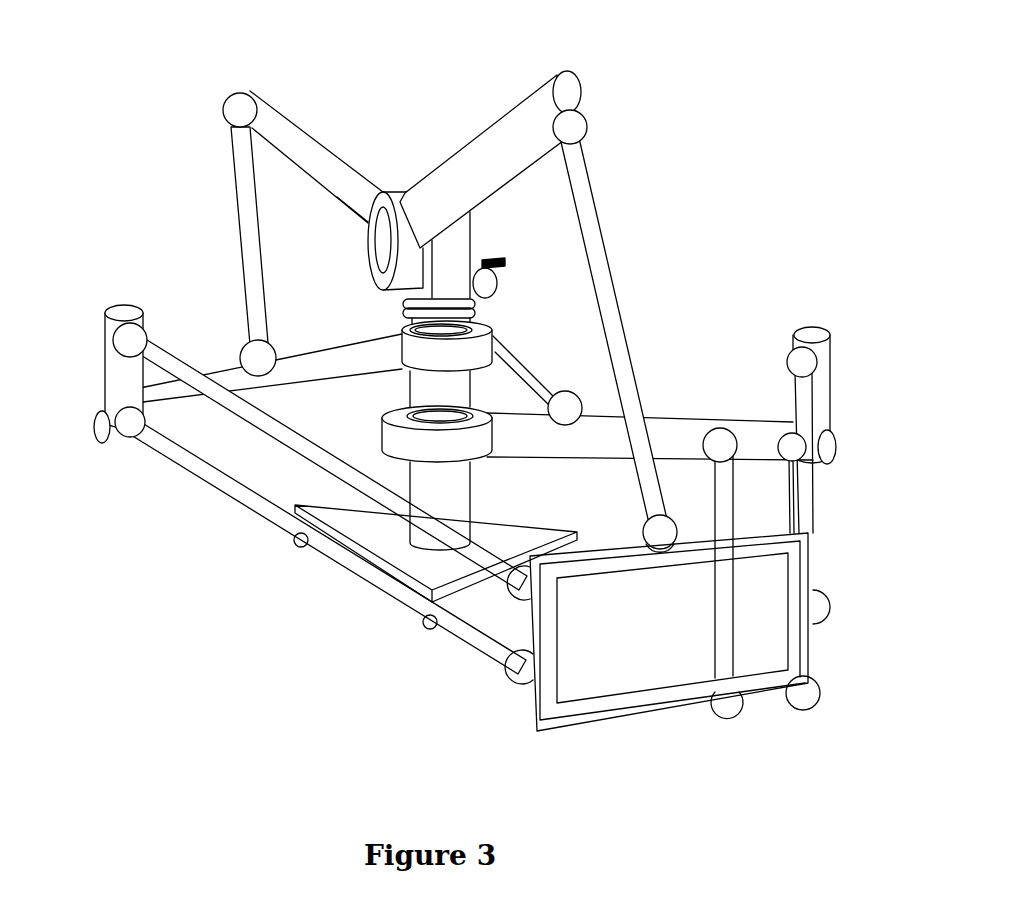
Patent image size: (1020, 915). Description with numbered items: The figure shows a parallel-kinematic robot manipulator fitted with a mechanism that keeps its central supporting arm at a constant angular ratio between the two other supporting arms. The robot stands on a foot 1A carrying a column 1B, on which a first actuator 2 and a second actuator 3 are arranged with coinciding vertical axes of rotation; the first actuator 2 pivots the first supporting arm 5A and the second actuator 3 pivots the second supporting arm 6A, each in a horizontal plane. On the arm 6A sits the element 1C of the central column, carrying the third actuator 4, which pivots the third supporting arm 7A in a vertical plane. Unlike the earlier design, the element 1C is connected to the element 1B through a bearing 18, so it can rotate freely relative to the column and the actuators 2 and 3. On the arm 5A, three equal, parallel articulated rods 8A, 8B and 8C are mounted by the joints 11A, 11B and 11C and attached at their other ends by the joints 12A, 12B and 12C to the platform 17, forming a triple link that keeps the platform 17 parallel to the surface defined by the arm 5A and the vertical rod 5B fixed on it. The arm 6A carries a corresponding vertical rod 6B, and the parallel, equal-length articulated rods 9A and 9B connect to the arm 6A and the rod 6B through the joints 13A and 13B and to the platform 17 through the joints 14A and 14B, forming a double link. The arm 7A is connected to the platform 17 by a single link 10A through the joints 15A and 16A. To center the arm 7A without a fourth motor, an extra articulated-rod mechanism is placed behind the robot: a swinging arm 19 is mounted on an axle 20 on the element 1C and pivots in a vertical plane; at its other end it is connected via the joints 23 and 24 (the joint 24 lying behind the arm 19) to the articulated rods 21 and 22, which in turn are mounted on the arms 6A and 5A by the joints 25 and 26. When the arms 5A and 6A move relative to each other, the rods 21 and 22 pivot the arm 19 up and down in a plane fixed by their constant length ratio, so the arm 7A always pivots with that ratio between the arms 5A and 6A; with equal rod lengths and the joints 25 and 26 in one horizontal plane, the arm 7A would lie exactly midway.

The foot 1A is at (513, 537).
The column 1B is at (410, 387).
The element 1C is at (449, 242).
The first actuator 2 is at (415, 441).
The second actuator 3 is at (473, 327).
The third actuator 4 is at (392, 195).
The first supporting arm 5A is at (660, 428).
The vertical rod 5B is at (826, 395).
The second supporting arm 6A is at (342, 365).
The vertical rod 6B is at (112, 396).
The third supporting arm 7A is at (487, 150).
The articulated rod 8A is at (810, 487).
The articulated rod 8B is at (790, 503).
The articulated rod 8C is at (723, 637).
The articulated rod 9A is at (312, 447).
The articulated rod 9B is at (242, 492).
The link 10A is at (584, 188).
The joint 11A is at (800, 358).
The joint 11B is at (790, 443).
The joint 11C is at (717, 437).
The joint 12A is at (828, 604).
The joint 12B is at (822, 688).
The joint 12C is at (733, 708).
The joint 13A is at (118, 338).
The joint 13B is at (126, 434).
The joint 14A is at (527, 587).
The joint 14B is at (522, 670).
The joint 15A is at (580, 125).
The joint 16A is at (652, 532).
The platform 17 is at (612, 708).
The bearing 18 is at (400, 303).
The swinging arm 19 is at (313, 158).
The axle 20 is at (505, 262).
The articulated rod 21 is at (248, 220).
The articulated rod 22 is at (512, 355).
The joint 23 is at (236, 112).
The joint 24 is at (282, 103).
The joint 25 is at (255, 355).
The joint 26 is at (568, 397).